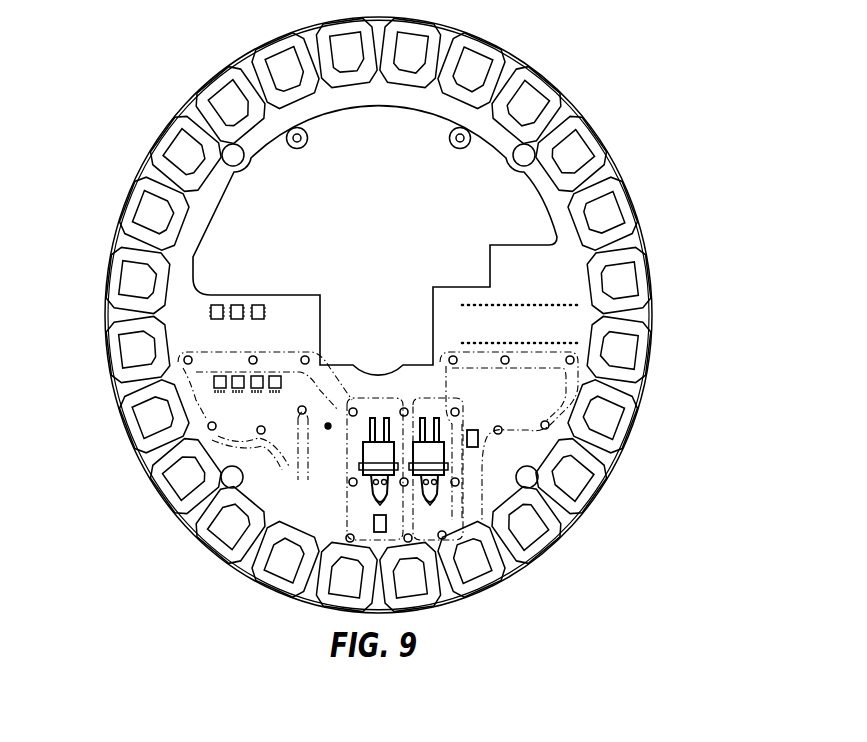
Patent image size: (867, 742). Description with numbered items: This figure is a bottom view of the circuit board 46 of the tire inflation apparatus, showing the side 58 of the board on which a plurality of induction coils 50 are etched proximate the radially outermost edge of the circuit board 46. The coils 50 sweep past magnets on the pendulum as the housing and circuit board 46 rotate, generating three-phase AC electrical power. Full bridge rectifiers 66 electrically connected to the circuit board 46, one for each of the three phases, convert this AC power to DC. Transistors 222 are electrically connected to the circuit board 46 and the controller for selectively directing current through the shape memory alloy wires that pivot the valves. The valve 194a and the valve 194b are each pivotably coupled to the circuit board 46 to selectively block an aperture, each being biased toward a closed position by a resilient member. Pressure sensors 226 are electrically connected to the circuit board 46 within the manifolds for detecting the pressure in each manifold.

The circuit board 46 is at (610, 172).
The induction coils 50 is at (622, 428).
The side of the circuit board 58 is at (568, 326).
The full bridge rectifier 66 is at (258, 304).
The transistor 222 is at (273, 394).
The valve 194a is at (435, 490).
The valve 194b is at (378, 490).
The pressure sensor 226 is at (380, 522).